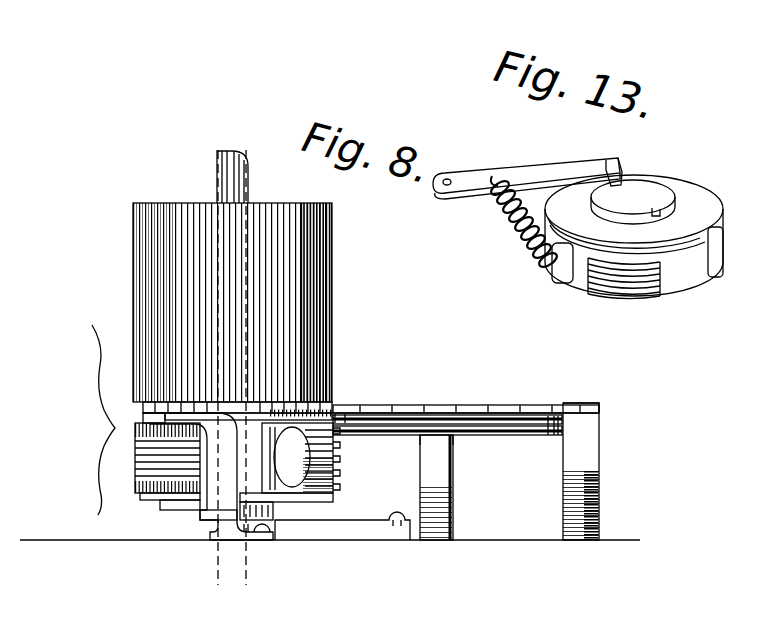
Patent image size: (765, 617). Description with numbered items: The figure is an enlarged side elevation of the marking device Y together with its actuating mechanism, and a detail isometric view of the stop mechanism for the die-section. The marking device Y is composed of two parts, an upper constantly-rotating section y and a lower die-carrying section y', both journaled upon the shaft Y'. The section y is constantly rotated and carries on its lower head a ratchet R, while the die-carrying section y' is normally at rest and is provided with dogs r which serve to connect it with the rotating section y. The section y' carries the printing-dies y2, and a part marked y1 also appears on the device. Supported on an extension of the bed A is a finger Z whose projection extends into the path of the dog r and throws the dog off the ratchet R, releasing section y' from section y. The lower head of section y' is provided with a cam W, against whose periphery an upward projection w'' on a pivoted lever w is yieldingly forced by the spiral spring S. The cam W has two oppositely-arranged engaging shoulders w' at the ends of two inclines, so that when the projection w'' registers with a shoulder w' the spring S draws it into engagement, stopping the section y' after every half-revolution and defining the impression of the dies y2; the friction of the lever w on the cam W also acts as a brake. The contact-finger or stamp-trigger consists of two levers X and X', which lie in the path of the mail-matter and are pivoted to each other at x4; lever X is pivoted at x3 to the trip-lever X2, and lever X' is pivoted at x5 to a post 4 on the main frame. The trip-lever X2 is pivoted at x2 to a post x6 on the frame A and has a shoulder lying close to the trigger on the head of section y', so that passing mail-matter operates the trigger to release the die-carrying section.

In FIG. 8, the bed A is at (620, 540).
In FIG. 8, the shaft Y' is at (214, 369).
In FIG. 8, the constantly-rotating section y is at (247, 302).
In FIG. 8, the ratchet R is at (332, 378).
In FIG. 8, the dog r is at (332, 406).
In FIG. 8, the finger Z is at (208, 476).
In FIG. 8, the printing-dies y2 is at (137, 468).
In FIG. 8, the die-carrying section y' is at (318, 458).
In FIG. 13, the die-carrying section y' is at (634, 226).
In FIG. 8, the plate y1 is at (143, 409).
In FIG. 8, the marking device Y is at (87, 420).
In FIG. 8, the cam W is at (197, 508).
In FIG. 13, the cam W is at (633, 202).
In FIG. 8, the upward projection w'' is at (210, 522).
In FIG. 13, the upward projection w'' is at (643, 166).
In FIG. 8, the pivoted lever w is at (342, 518).
In FIG. 13, the pivoted lever w is at (526, 166).
In FIG. 13, the engaging shoulders w' is at (619, 187).
In FIG. 8, the lever X is at (466, 400).
In FIG. 8, the lever X' is at (447, 403).
In FIG. 8, the trip-lever X2 is at (521, 408).
In FIG. 8, the pivot x3 is at (438, 413).
In FIG. 8, the pivot x5 is at (456, 438).
In FIG. 8, the pivot x4 is at (541, 430).
In FIG. 8, the post 4 is at (452, 512).
In FIG. 8, the post x6 is at (595, 486).
In FIG. 8, the pivot x2 is at (585, 404).
In FIG. 13, the spiral spring S is at (522, 223).